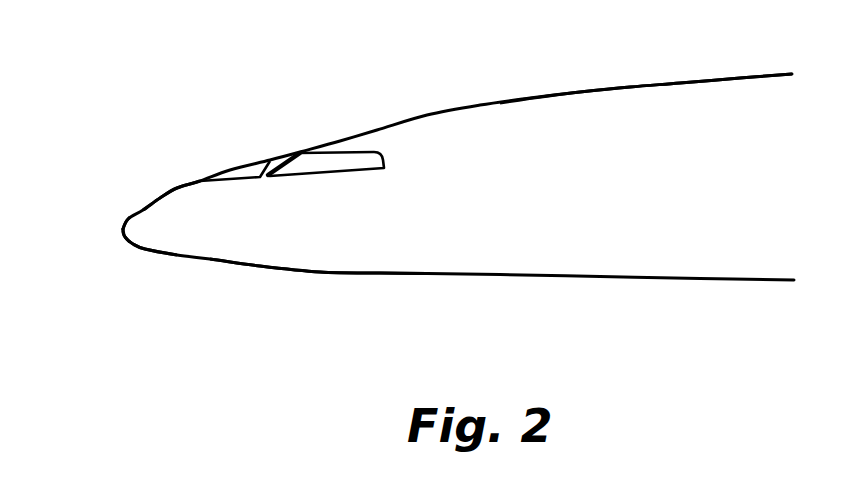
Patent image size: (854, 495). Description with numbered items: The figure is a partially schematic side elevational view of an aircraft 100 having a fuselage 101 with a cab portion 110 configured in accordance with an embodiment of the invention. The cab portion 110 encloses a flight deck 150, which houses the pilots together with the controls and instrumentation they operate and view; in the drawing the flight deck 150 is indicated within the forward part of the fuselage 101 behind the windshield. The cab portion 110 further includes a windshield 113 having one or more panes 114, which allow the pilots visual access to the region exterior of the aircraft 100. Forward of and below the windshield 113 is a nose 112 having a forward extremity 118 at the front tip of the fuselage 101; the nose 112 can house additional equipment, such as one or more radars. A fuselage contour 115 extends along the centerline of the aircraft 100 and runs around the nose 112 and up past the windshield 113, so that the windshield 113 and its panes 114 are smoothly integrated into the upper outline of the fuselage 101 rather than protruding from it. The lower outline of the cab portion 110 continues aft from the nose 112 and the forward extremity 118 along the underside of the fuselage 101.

The aircraft 100 is at (642, 295).
The fuselage 101 is at (648, 85).
The cab portion 110 is at (318, 275).
The nose 112 is at (135, 250).
The windshield 113 is at (242, 156).
The pane 114 is at (342, 158).
The fuselage contour 115 is at (180, 185).
The forward extremity 118 is at (123, 229).
The flight deck 150 is at (433, 152).